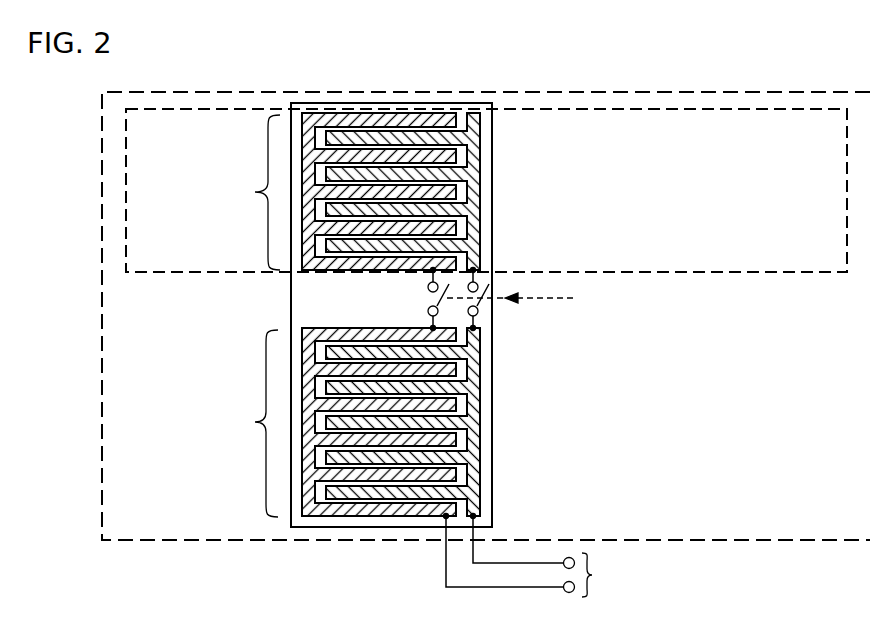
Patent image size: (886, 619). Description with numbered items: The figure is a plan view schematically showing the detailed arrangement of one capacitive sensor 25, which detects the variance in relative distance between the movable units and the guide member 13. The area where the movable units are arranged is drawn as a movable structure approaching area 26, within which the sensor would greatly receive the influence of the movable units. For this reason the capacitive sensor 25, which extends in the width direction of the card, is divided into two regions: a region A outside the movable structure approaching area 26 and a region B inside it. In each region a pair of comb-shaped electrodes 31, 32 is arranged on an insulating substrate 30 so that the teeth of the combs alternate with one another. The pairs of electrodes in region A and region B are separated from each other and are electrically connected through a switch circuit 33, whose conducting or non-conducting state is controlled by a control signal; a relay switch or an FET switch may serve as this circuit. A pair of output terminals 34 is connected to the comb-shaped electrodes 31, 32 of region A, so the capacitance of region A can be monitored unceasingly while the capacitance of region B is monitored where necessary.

The guide member 13 is at (102, 355).
The capacitive sensor 25 is at (284, 525).
The movable structure approaching area 26 is at (170, 270).
The insulating substrate 30 is at (492, 172).
The comb-shaped electrode 31 is at (480, 199).
The comb-shaped electrode 32 is at (330, 332).
The switch circuit 33 is at (491, 306).
The output terminals 34 is at (536, 556).